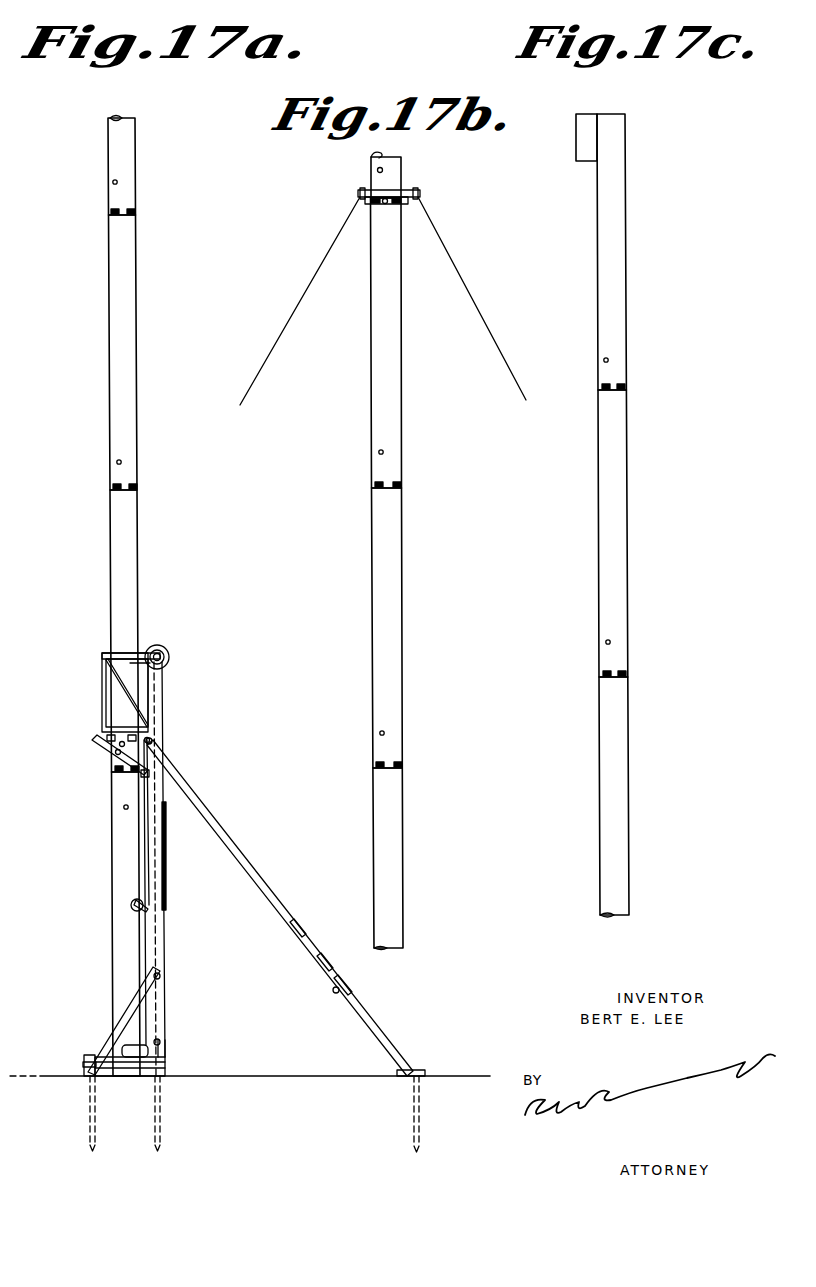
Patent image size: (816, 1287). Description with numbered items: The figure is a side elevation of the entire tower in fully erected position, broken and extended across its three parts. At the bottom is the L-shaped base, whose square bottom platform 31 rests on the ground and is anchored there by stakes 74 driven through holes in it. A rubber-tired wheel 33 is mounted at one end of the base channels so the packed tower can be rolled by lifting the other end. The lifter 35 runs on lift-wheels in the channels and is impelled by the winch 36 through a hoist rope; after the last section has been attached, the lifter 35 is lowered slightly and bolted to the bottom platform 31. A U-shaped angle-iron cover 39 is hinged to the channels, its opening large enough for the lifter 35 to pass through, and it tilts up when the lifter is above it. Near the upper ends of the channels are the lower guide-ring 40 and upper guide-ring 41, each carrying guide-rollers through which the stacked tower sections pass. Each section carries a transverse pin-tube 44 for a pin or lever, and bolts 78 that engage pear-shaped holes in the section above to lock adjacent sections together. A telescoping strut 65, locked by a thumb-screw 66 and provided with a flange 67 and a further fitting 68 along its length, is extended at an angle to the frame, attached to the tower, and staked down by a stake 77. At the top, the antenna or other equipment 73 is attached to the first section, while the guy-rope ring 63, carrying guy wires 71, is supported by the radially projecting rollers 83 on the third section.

In FIG. 17A, the bottom platform 31 is at (86, 1062).
In FIG. 17A, the rubber-tired wheel 33 is at (170, 647).
In FIG. 17A, the lifter 35 is at (137, 1044).
In FIG. 17A, the winch 36 is at (130, 906).
In FIG. 17A, the U-shaped cover 39 is at (100, 748).
In FIG. 17A, the lower guide-ring 40 is at (117, 721).
In FIG. 17A, the upper guide-ring 41 is at (121, 651).
In FIG. 17A, the transverse tube 44 is at (113, 183).
In FIG. 17B, the transverse tube 44 is at (378, 453).
In FIG. 17C, the transverse tube 44 is at (605, 642).
In FIG. 17B, the guy-rope ring 63 is at (405, 191).
In FIG. 17A, the telescoping strut 65 is at (266, 868).
In FIG. 17A, the thumb-screw 66 is at (358, 982).
In FIG. 17A, the flange 67 is at (294, 932).
In FIG. 17A, the brace coupling 68 is at (320, 968).
In FIG. 17B, the guy wire 71 is at (320, 272).
In FIG. 17C, the antenna 73 is at (590, 119).
In FIG. 17A, the stake 74 is at (155, 1096).
In FIG. 17A, the stake 77 is at (413, 1115).
In FIG. 17A, the bolt 78 is at (108, 216).
In FIG. 17B, the bolt 78 is at (401, 489).
In FIG. 17C, the bolt 78 is at (628, 390).
In FIG. 17B, the roller 83 is at (386, 205).